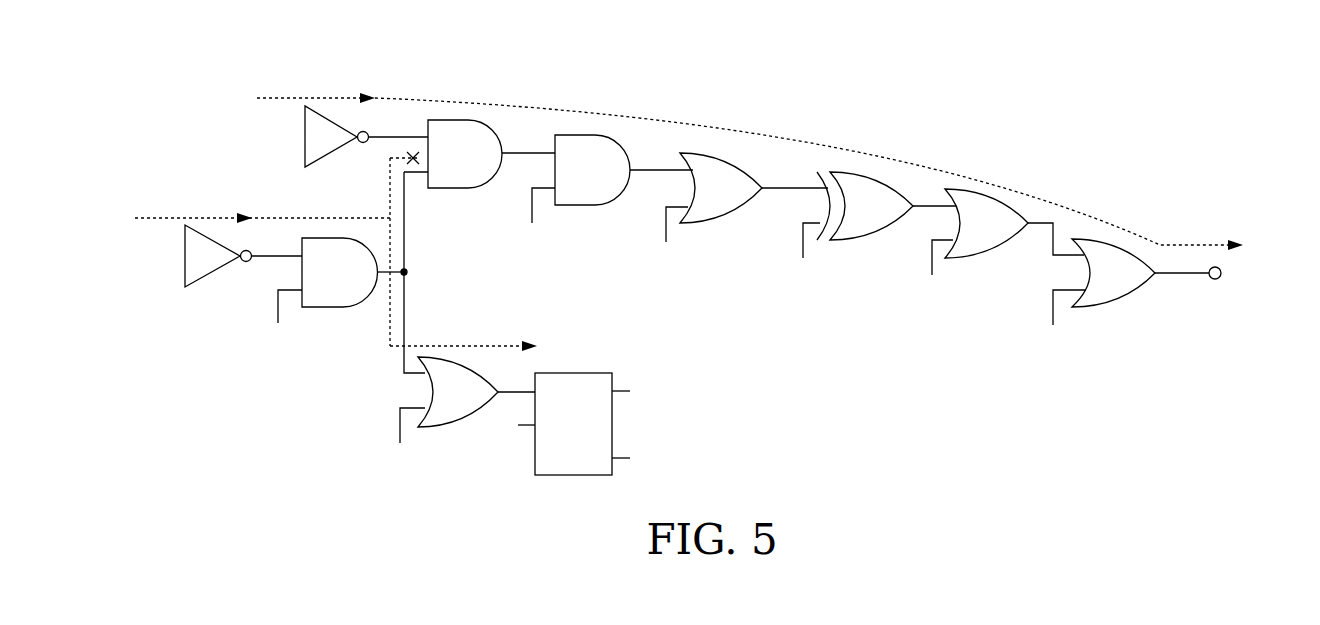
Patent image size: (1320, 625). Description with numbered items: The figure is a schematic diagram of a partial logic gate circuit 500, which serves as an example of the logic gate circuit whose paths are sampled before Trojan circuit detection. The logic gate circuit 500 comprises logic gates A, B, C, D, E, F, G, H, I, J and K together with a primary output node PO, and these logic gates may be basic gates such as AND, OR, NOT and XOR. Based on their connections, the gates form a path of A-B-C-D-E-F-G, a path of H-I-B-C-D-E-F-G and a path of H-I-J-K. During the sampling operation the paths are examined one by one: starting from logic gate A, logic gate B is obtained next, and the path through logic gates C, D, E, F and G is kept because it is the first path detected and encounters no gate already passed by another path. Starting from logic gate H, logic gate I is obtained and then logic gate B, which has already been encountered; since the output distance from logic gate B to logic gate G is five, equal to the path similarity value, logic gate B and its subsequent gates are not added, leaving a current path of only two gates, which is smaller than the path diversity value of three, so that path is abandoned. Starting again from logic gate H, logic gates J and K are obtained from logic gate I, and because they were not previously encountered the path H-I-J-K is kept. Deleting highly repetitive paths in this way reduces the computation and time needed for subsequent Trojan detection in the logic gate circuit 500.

The logic gate circuit 500 is at (211, 78).
The logic gate A is at (337, 136).
The logic gate B is at (465, 154).
The logic gate C is at (592, 170).
The logic gate D is at (721, 188).
The logic gate E is at (865, 206).
The logic gate F is at (986, 223).
The logic gate G is at (1113, 273).
The logic gate H is at (218, 256).
The logic gate I is at (340, 272).
The logic gate J is at (458, 392).
The logic gate K is at (573, 424).
The primary output node PO is at (1239, 275).